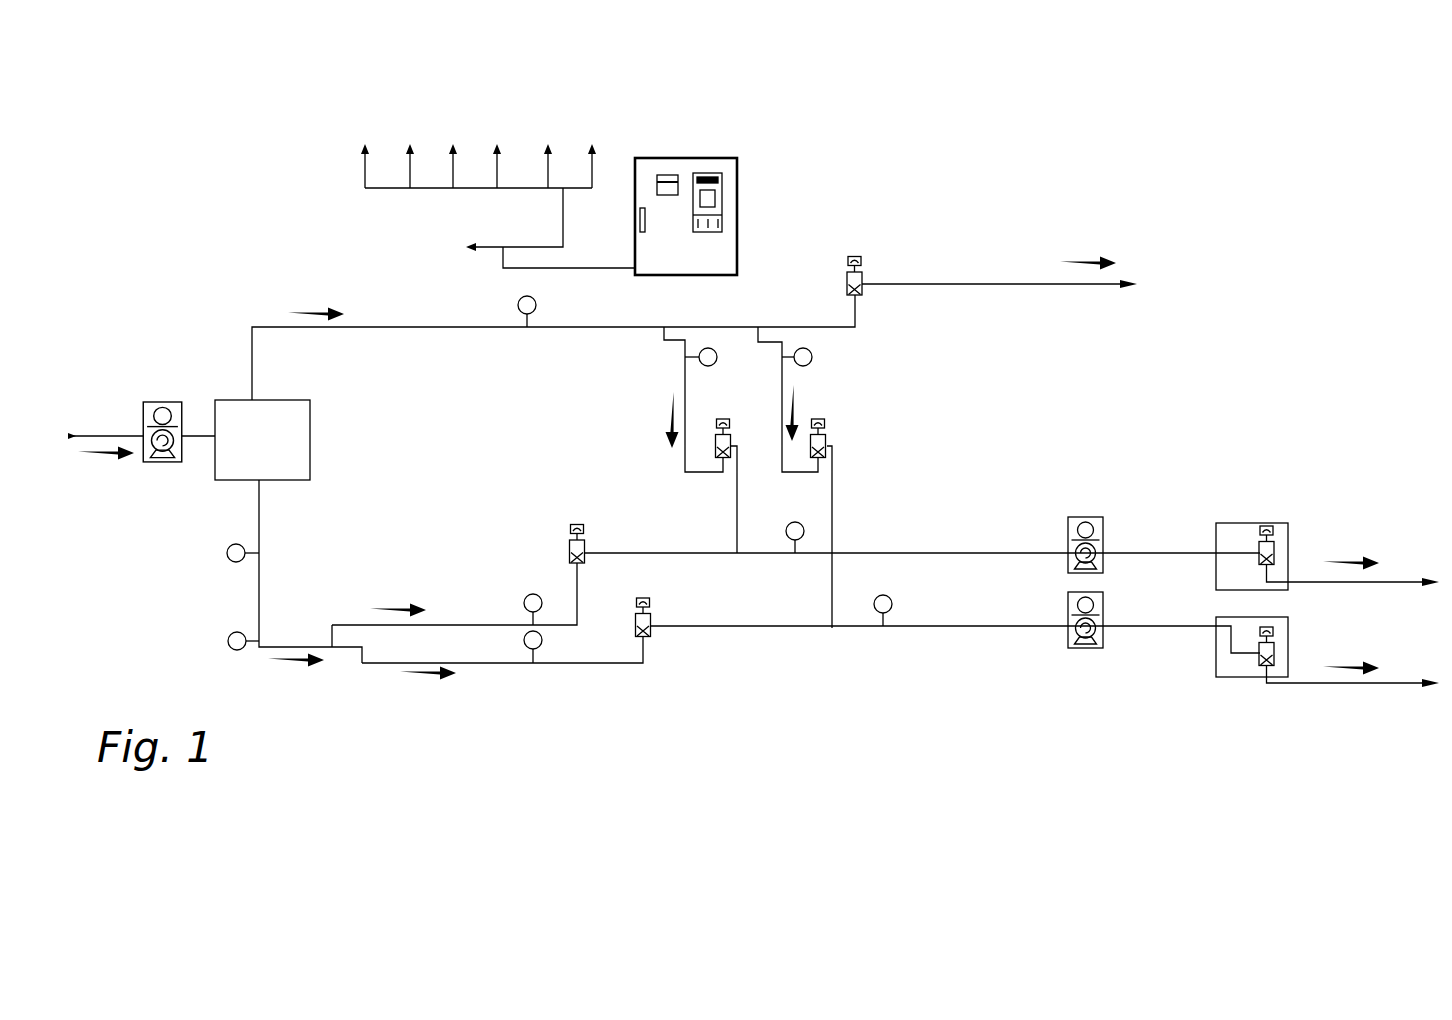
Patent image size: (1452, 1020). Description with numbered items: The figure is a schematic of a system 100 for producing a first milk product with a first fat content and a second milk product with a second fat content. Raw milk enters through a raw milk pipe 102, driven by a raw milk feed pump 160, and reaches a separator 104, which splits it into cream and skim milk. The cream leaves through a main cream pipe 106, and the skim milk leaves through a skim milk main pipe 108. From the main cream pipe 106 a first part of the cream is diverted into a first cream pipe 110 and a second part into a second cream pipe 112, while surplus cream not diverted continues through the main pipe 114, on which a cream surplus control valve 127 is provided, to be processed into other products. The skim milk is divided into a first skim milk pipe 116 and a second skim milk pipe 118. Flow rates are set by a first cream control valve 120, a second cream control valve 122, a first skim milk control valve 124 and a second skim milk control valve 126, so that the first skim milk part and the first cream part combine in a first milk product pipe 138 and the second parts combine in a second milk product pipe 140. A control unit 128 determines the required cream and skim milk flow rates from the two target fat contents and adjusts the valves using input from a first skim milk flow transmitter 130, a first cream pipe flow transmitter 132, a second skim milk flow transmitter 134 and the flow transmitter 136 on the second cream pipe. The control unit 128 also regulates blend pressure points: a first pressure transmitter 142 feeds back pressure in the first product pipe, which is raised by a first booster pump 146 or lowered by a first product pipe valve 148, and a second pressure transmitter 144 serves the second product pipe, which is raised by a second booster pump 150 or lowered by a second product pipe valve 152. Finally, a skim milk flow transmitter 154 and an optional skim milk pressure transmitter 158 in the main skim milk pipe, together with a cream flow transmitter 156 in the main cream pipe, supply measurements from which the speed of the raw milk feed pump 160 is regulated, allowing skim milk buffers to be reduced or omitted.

The system 100 is at (210, 188).
The raw milk pipe 102 is at (92, 436).
The separator 104 is at (300, 420).
The main cream pipe 106 is at (395, 327).
The skim milk main pipe 108 is at (300, 647).
The first cream pipe 110 is at (685, 450).
The second cream pipe 112 is at (782, 385).
The main pipe 114 is at (950, 284).
The first skim milk pipe 116 is at (440, 623).
The second skim milk pipe 118 is at (575, 663).
The first cream control valve 120 is at (707, 472).
The second cream control valve 122 is at (828, 437).
The first skim milk control valve 124 is at (570, 548).
The second skim milk control valve 126 is at (652, 637).
The cream surplus control valve 127 is at (855, 257).
The control unit 128 is at (727, 193).
The first skim milk flow transmitter 130 is at (524, 598).
The first cream pipe flow transmitter 132 is at (699, 357).
The second skim milk flow transmitter 134 is at (530, 665).
The first cream pipe flow transmitter of the second cream pipe 136 is at (813, 357).
The first milk product pipe 138 is at (962, 553).
The second milk product pipe 140 is at (990, 628).
The first pressure transmitter 142 is at (789, 545).
The second pressure transmitter 144 is at (878, 626).
The first booster pump 146 is at (1088, 517).
The first product pipe valve 148 is at (1222, 532).
The second booster pump 150 is at (1090, 648).
The second product pipe valve 152 is at (1227, 668).
The skim milk flow transmitter 154 is at (228, 641).
The cream flow transmitter 156 is at (520, 298).
The skim milk pressure transmitter 158 is at (227, 556).
The raw milk feed pump 160 is at (168, 402).